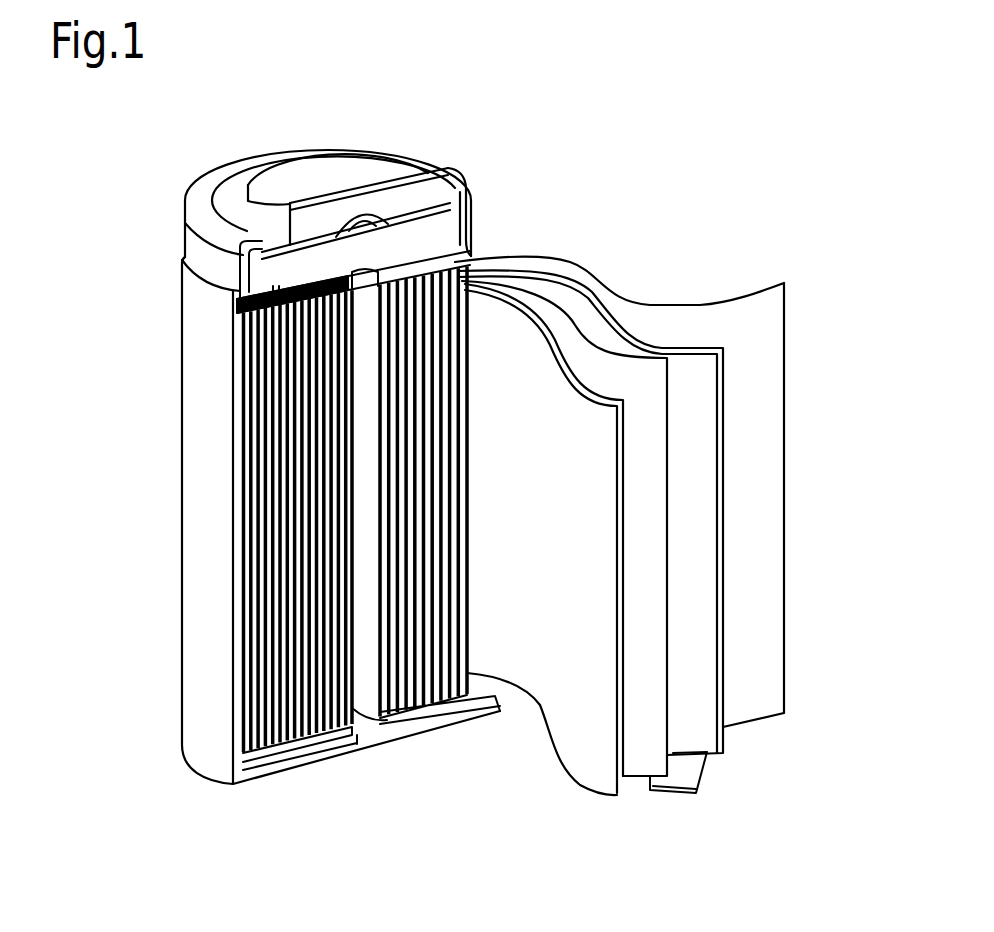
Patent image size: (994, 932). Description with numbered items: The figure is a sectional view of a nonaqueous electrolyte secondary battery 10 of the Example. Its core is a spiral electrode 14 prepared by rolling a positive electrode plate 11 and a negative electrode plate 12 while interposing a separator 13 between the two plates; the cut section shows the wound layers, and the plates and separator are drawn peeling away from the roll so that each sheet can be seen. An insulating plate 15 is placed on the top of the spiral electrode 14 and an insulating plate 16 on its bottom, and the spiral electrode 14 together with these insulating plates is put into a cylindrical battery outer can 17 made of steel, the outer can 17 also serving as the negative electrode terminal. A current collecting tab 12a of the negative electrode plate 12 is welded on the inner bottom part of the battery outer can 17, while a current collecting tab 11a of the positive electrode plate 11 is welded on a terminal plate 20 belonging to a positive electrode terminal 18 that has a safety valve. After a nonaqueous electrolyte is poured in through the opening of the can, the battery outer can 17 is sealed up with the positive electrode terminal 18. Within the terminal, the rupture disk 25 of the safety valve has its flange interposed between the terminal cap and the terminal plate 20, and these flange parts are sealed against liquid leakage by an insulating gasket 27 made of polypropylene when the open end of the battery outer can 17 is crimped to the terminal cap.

The nonaqueous electrolyte secondary battery 10 is at (684, 53).
The positive electrode plate 11 is at (613, 440).
The current collecting tab of the positive electrode plate 11a is at (207, 250).
The negative electrode plate 12 is at (705, 613).
The current collecting tab of the negative electrode plate 12a is at (688, 777).
The separator 13 is at (760, 312).
The spiral electrode 14 is at (218, 528).
The insulating plate 15 is at (242, 317).
The insulating plate 16 is at (265, 740).
The battery outer can 17 is at (200, 597).
The positive electrode terminal 18 is at (327, 143).
The terminal plate 20 is at (478, 217).
The rupture disk 25 is at (377, 213).
The insulating gasket 27 is at (462, 172).